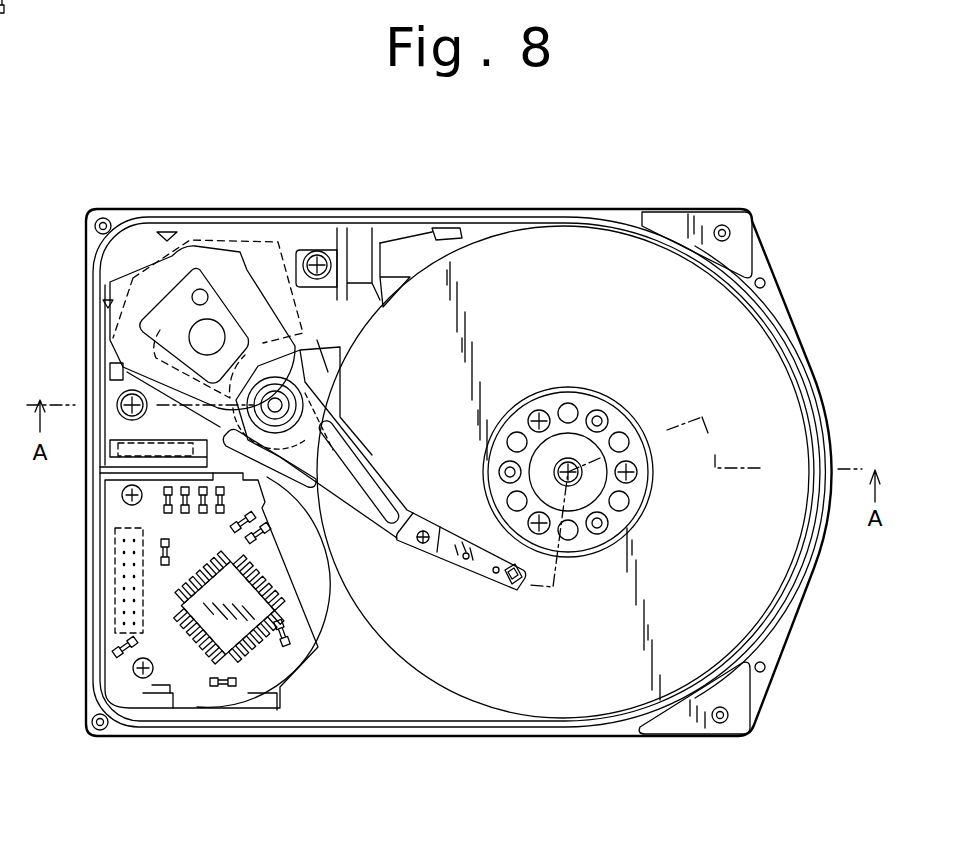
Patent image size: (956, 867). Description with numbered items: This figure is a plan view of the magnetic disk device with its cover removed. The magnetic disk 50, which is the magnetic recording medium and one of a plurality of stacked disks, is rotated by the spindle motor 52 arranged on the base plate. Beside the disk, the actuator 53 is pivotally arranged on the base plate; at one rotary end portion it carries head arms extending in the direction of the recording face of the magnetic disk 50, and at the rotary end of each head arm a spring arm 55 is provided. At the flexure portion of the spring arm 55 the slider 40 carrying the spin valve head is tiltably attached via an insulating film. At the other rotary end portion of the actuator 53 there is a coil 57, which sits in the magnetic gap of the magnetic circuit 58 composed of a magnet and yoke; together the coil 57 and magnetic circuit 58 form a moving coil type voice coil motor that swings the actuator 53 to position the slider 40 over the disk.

The slider 40 is at (514, 590).
The magnetic disk 50 is at (753, 608).
The spindle motor 52 is at (597, 566).
The actuator 53 is at (363, 433).
The spring arm 55 is at (452, 568).
The coil 57 is at (186, 256).
The magnetic circuit 58 is at (277, 237).